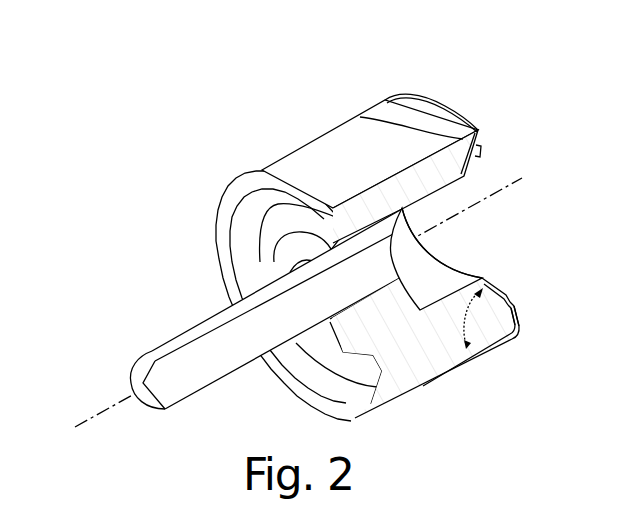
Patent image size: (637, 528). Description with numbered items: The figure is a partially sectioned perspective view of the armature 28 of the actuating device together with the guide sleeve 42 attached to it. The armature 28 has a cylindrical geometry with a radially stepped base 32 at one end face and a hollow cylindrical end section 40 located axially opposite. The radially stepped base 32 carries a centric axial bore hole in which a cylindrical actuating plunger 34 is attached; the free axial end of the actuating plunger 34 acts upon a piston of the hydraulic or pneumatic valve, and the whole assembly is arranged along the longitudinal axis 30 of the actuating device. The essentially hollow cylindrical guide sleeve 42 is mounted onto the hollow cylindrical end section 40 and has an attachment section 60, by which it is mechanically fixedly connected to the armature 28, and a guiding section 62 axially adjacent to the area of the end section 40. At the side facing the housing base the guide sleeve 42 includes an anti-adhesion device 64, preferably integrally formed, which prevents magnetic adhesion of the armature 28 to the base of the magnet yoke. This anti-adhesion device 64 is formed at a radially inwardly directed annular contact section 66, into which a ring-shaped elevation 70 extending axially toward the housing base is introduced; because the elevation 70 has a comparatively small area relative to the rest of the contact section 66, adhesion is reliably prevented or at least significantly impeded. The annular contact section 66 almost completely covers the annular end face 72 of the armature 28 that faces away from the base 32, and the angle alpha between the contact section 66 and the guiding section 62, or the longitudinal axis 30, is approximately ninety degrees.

The armature 28 is at (252, 92).
The longitudinal axis 30 is at (108, 403).
The radially stepped base 32 is at (300, 168).
The actuating plunger 34 is at (163, 343).
The hollow cylindrical end section 40 is at (473, 313).
The guide sleeve 42 is at (440, 125).
The attachment section 60 is at (504, 357).
The guiding section 62 is at (527, 344).
The anti-adhesion device 64 is at (517, 293).
The annular contact section 66 is at (517, 320).
The ring-shaped elevation 70 is at (520, 301).
The annular end face 72 is at (465, 172).